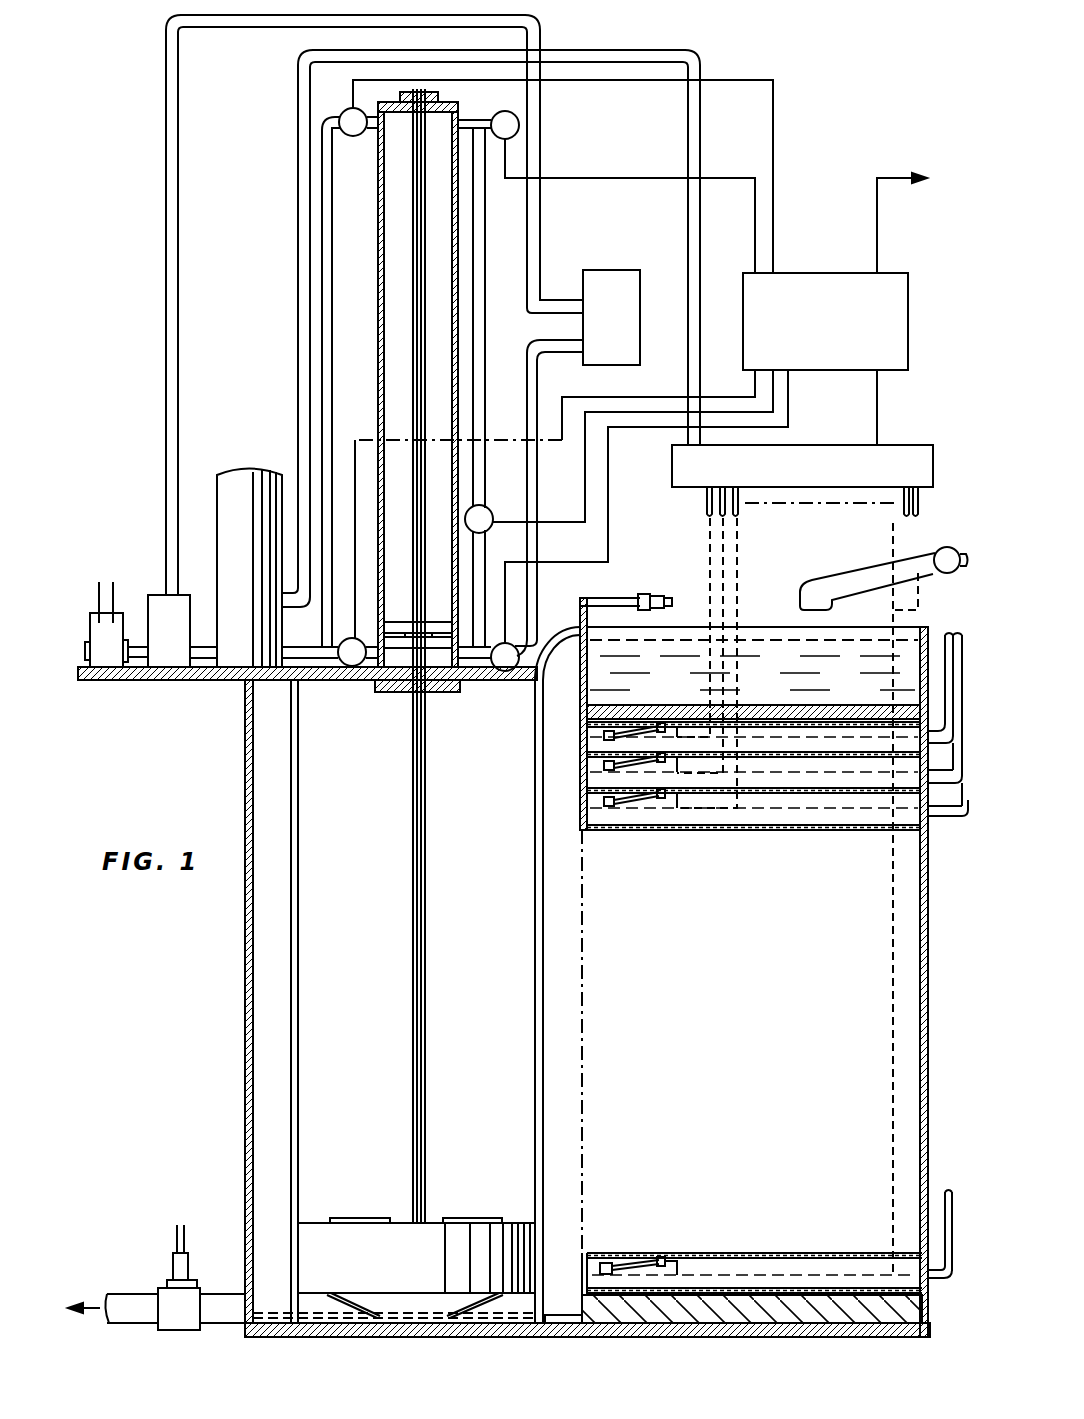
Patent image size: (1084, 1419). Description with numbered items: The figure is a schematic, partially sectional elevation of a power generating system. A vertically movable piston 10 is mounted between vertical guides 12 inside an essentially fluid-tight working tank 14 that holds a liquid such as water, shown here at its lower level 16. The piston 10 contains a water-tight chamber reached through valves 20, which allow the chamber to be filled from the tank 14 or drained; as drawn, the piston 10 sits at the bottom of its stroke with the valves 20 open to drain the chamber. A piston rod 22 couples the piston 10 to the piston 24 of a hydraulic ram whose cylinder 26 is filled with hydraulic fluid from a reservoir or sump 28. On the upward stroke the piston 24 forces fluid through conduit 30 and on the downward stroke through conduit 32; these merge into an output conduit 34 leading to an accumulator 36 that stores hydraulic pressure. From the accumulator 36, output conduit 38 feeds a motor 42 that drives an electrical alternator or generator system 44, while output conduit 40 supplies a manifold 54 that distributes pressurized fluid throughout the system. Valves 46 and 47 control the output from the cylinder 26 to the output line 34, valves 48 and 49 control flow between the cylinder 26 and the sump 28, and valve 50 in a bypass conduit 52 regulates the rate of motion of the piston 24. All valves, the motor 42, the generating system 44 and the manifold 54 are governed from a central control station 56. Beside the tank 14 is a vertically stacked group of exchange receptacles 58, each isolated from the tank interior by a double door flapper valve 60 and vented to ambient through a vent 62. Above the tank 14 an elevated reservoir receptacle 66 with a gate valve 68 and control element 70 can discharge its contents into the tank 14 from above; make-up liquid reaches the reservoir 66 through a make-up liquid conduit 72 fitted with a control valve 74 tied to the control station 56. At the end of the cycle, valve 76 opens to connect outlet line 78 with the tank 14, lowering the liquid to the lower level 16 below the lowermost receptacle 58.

The piston 10 is at (322, 1221).
The vertical guides 12 is at (299, 936).
The working tank 14 is at (244, 990).
The lower level 16 is at (268, 1310).
The valves 20 is at (475, 1221).
The piston rod 22 is at (427, 872).
The piston 24 is at (388, 620).
The cylinder 26 is at (378, 380).
The reservoir or sump 28 is at (624, 285).
The conduit 30 is at (332, 244).
The conduit 32 is at (337, 665).
The output conduit 34 is at (307, 650).
The accumulator 36 is at (236, 480).
The output conduit 38 is at (205, 648).
The output conduit 40 is at (298, 356).
The motor 42 is at (160, 600).
The electrical alternator or generator system 44 is at (90, 620).
The valve 46 is at (350, 118).
The valve 47 is at (352, 667).
The valve 48 is at (511, 121).
The valve 49 is at (505, 672).
The valve 50 is at (485, 512).
The bypass conduit 52 is at (480, 329).
The manifold 54 is at (832, 452).
The central control station 56 is at (818, 283).
The exchange receptacles 58 is at (776, 760).
The double door flapper valve 60 is at (583, 800).
The vent 62 is at (935, 640).
The reservoir receptacle 66 is at (765, 660).
The gate valve 68 is at (594, 668).
The control element 70 is at (625, 597).
The make-up liquid conduit 72 is at (812, 583).
The control valve 74 is at (947, 547).
The valve 76 is at (165, 1300).
The outlet line 78 is at (120, 1294).